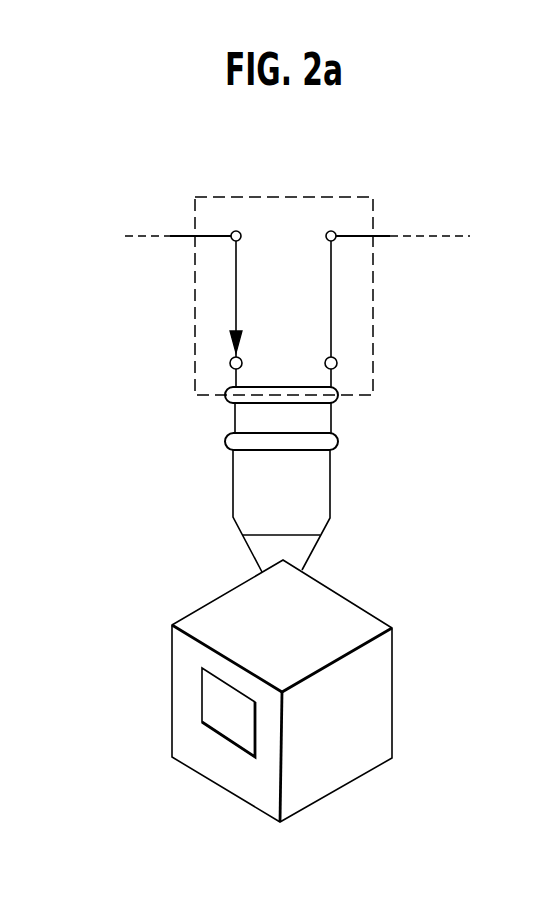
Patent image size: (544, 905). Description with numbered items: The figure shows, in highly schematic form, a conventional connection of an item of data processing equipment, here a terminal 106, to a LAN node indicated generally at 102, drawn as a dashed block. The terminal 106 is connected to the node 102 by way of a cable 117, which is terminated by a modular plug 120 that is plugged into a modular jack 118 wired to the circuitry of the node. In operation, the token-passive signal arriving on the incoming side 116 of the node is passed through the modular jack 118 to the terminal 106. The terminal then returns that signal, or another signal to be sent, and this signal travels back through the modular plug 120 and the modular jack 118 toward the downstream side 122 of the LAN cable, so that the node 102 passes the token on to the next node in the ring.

The node 102 is at (273, 197).
The incoming side 116 is at (175, 236).
The downstream side 122 is at (390, 236).
The modular jack 118 is at (339, 400).
The modular plug 120 is at (339, 447).
The cable 117 is at (243, 535).
The terminal 106 is at (378, 696).